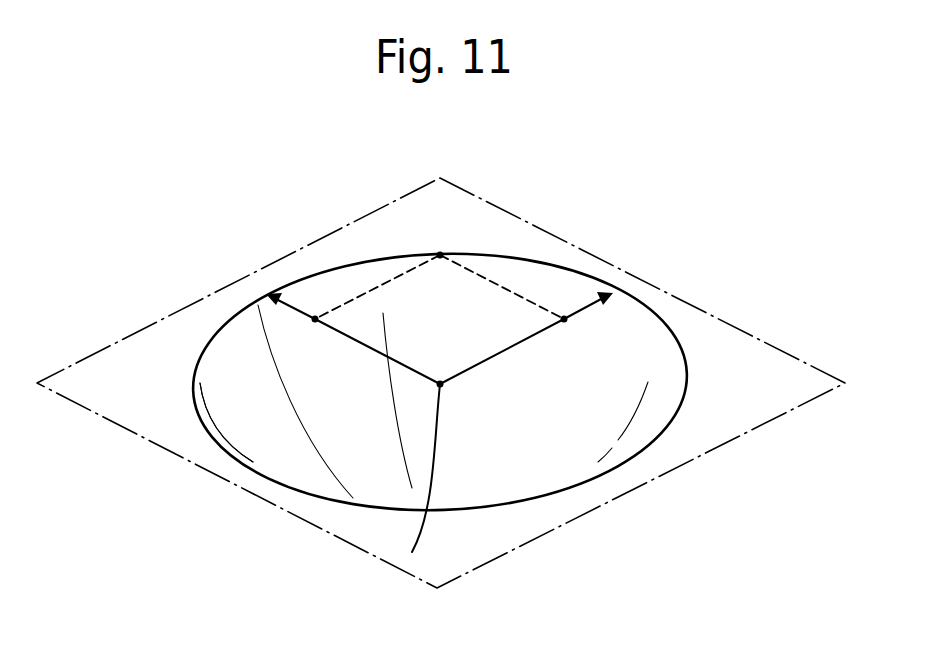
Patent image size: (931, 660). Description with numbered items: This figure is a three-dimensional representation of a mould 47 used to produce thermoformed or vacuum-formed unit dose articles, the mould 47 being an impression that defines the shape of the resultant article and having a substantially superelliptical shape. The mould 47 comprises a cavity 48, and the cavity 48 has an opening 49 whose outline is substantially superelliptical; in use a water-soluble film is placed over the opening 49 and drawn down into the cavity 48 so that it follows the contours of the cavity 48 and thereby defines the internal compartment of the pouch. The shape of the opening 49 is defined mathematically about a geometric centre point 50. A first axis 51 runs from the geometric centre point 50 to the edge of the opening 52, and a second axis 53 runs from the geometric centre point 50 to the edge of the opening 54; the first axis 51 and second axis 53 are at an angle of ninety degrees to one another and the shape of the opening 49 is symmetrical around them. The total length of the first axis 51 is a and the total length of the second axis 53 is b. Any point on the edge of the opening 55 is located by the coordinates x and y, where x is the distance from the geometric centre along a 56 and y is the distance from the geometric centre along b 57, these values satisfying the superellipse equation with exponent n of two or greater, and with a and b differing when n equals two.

The mould 47 is at (713, 252).
The cavity 48 is at (550, 460).
The opening 49 is at (257, 470).
The geometric centre point 50 is at (412, 552).
The first axis 51 is at (327, 327).
The edge of the opening 52 is at (262, 293).
The second axis 53 is at (553, 327).
The edge of the opening 54 is at (613, 293).
The point on the edge of the opening 55 is at (440, 255).
The distance along a 56 is at (360, 293).
The distance along b 57 is at (510, 290).